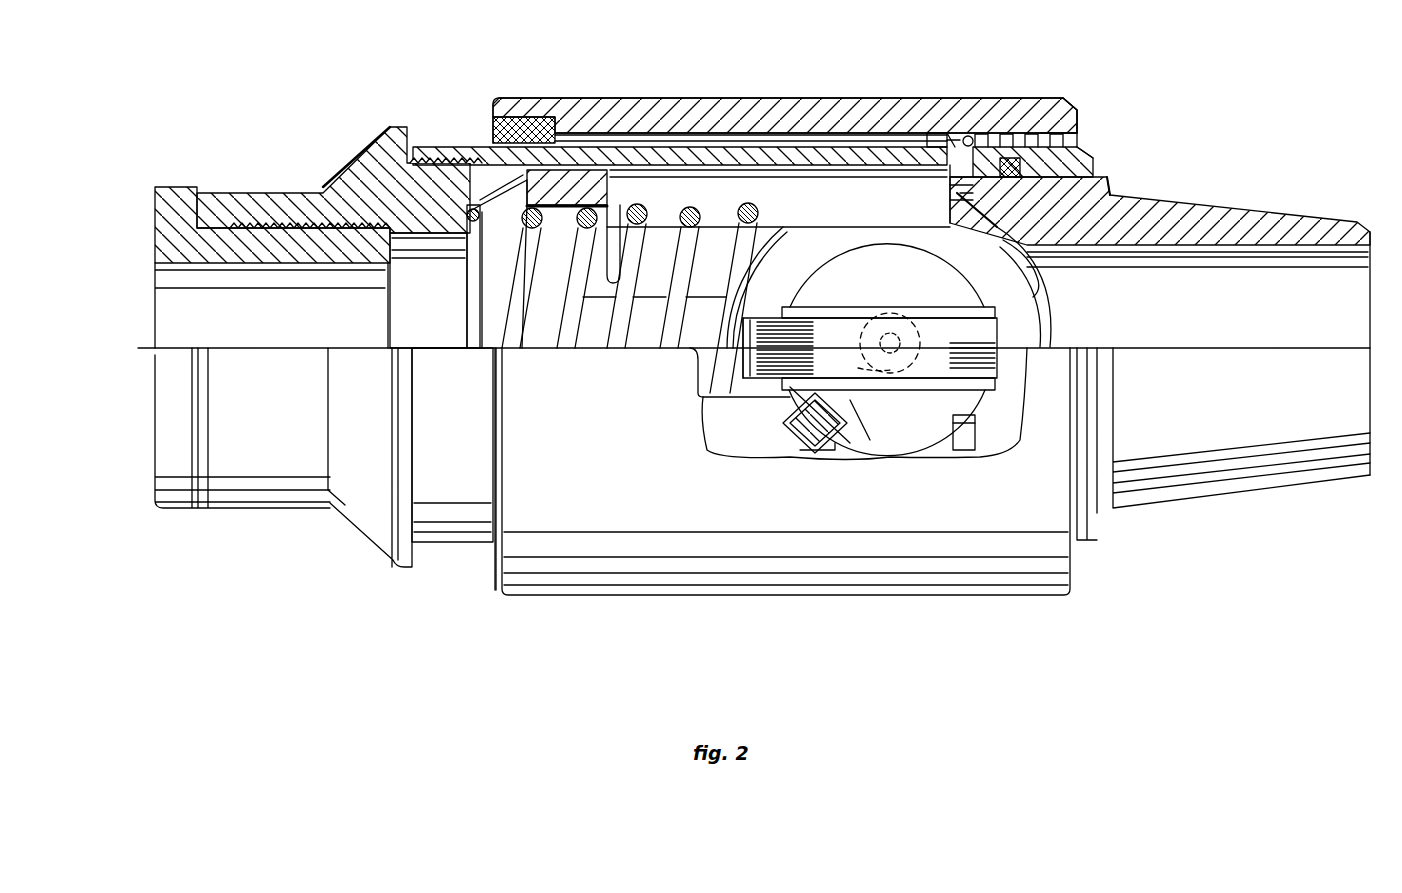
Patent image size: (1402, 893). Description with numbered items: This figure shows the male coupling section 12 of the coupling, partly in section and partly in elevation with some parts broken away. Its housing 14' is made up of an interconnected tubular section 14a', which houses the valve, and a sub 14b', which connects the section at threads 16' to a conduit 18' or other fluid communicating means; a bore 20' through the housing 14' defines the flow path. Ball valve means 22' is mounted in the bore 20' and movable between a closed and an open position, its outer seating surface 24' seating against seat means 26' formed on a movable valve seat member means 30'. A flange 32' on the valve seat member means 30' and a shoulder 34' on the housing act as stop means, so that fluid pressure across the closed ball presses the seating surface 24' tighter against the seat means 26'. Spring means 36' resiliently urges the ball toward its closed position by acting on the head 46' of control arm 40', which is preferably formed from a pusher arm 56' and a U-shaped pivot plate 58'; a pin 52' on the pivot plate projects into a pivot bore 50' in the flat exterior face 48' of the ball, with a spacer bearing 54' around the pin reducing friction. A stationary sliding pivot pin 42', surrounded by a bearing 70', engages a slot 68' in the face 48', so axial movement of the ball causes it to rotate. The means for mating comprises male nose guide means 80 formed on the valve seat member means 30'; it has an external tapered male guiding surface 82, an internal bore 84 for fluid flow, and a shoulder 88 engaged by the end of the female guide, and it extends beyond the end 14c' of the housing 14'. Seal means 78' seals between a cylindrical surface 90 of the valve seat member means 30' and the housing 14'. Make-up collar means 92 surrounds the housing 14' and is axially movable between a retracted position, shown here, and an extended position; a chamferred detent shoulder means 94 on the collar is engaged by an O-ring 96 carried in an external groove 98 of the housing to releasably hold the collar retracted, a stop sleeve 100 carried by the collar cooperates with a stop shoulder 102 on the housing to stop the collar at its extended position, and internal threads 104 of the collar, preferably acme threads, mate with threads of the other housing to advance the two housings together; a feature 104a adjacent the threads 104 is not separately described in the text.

The male coupling section 12 is at (393, 60).
The conduit 18' is at (272, 316).
The threads 16' is at (310, 176).
The sub 14b' is at (333, 167).
The housing 14' is at (427, 398).
The bore 20' is at (442, 411).
The stop sleeve 100 is at (536, 116).
The tubular section 14a' is at (678, 165).
The make-up collar means 92 is at (729, 98).
The stop shoulder 102 is at (945, 143).
The detent shoulder means 94 is at (960, 143).
The O-ring 96 is at (975, 143).
The external groove 98 is at (1005, 158).
The seal means 78' is at (1019, 110).
The internal threads 104 is at (1047, 135).
The flange 104a is at (1075, 127).
The valve seat member means 30' is at (1103, 129).
The end of housing 14c' is at (1072, 156).
The shoulder 88 is at (1110, 188).
The male guiding surface 82 is at (1258, 210).
The internal bore 84 is at (1243, 250).
The male nose guide means 80 is at (1193, 500).
The spring means 36' is at (630, 289).
The ball valve means 22' is at (817, 312).
The shoulder 34' is at (906, 199).
The flange 32' is at (934, 207).
The cylindrical surface 90 is at (980, 180).
The seat means 26' is at (1046, 268).
The outer seating surface 24' is at (1058, 287).
The pusher arm 56' is at (888, 298).
The flat exterior face 48' is at (870, 321).
The pivot plate 58' is at (888, 334).
The pin 52' is at (860, 343).
The pivot bore 50' is at (908, 343).
The spacer bearing 54' is at (840, 363).
The head 46' is at (686, 356).
The control arm 40' is at (887, 350).
The sliding pivot means 42' is at (795, 455).
The bearing 70' is at (823, 477).
The slot 68' is at (844, 449).